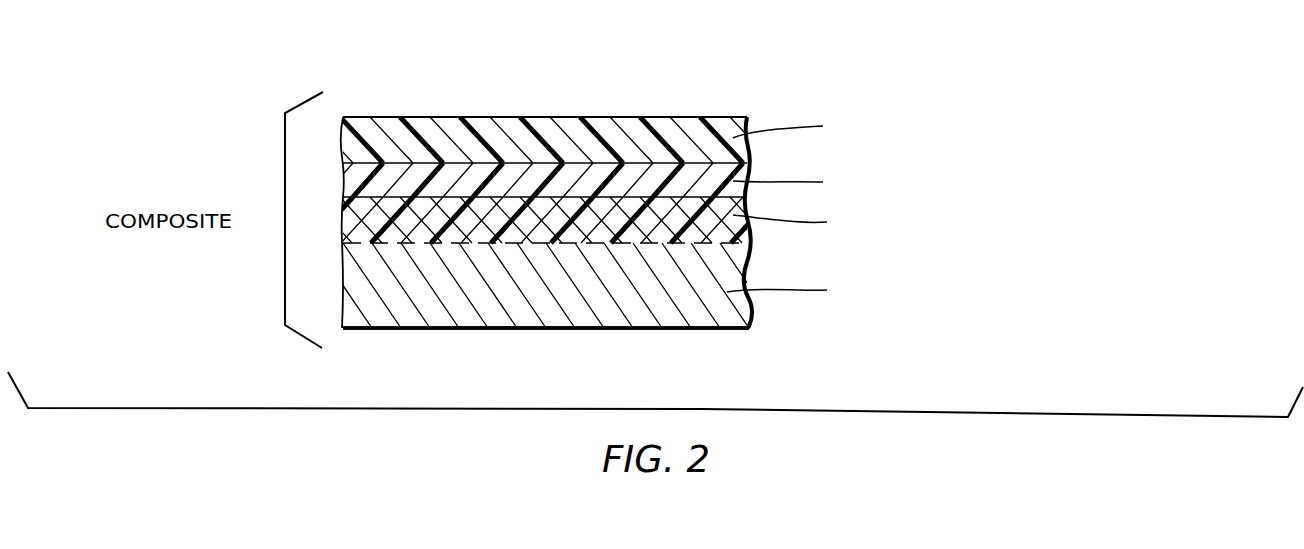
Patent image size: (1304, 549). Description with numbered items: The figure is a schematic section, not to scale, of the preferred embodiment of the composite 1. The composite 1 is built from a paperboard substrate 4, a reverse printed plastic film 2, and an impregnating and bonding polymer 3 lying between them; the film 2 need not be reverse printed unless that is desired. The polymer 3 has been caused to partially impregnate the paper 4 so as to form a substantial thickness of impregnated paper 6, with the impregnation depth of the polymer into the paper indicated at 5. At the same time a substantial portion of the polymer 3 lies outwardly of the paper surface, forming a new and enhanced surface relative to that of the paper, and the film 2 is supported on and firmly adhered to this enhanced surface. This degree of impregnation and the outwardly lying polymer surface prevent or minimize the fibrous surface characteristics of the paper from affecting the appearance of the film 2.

The composite 1 is at (517, 95).
The reverse printed plastic film 2 is at (616, 117).
The impregnating and bonding polymer 3 is at (696, 162).
The paperboard substrate 4 is at (460, 328).
The impregnation depth 5 is at (345, 262).
The impregnated paper 6 is at (345, 220).